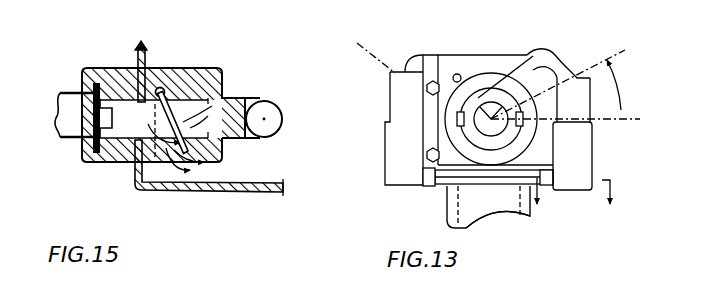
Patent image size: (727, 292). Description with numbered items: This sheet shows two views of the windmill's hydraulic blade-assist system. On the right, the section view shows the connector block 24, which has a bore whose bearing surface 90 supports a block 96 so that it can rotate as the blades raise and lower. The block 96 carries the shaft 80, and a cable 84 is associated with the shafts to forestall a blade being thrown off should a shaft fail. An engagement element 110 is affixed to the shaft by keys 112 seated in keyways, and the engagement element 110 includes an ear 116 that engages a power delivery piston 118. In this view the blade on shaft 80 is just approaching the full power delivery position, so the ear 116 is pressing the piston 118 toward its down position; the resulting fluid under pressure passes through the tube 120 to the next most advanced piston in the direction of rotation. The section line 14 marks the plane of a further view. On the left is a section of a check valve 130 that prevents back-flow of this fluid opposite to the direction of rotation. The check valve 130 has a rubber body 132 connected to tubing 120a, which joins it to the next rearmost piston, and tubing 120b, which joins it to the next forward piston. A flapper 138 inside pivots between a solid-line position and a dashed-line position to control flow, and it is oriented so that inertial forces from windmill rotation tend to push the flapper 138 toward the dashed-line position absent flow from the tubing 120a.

In FIG. 13, the section line 14 is at (574, 201).
In FIG. 13, the connector block 24 is at (466, 63).
In FIG. 13, the shaft portion 80 is at (548, 140).
In FIG. 13, the cable 84 is at (492, 0).
In FIG. 13, the bearing surface 90 is at (458, 54).
In FIG. 13, the block 96 is at (548, 160).
In FIG. 13, the engagement element 110 is at (447, 170).
In FIG. 13, the key 112 is at (457, 120).
In FIG. 13, the ear 116 is at (551, 58).
In FIG. 13, the power delivery piston 118 is at (623, 80).
In FIG. 15, the tube 120 is at (163, 119).
In FIG. 13, the tube 120 is at (498, 165).
In FIG. 15, the tubing 120a is at (63, 93).
In FIG. 15, the tubing 120b is at (276, 108).
In FIG. 15, the check valve 130 is at (165, 68).
In FIG. 15, the rubber body 132 is at (199, 70).
In FIG. 15, the flapper 138 is at (253, 98).